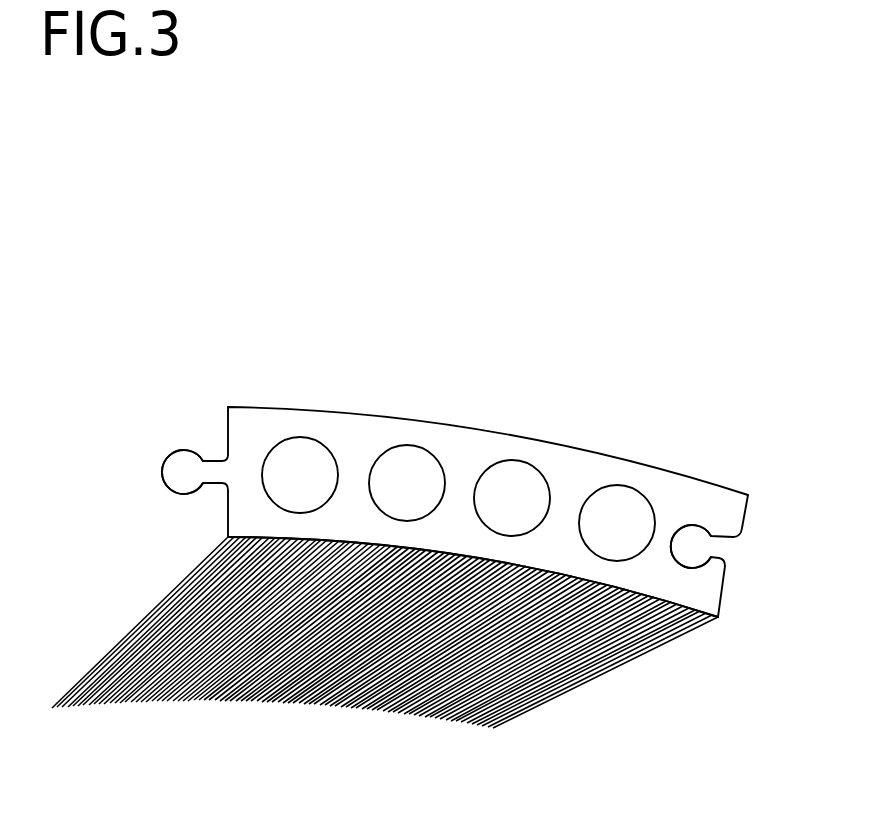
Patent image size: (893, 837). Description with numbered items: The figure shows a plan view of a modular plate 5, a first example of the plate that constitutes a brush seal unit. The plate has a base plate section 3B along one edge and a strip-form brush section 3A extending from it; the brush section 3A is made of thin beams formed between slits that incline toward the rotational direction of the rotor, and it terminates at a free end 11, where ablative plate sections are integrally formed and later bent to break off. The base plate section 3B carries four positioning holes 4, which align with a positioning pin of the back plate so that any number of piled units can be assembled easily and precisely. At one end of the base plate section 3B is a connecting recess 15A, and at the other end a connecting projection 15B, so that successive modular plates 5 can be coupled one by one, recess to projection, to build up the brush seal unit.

The modular plate 5 is at (749, 347).
The brush section 3A is at (565, 670).
The base plate section 3B is at (485, 447).
The positioning holes 4 is at (402, 460).
The free end 11 is at (310, 702).
The connecting recess 15A is at (693, 548).
The connecting projection 15B is at (175, 473).